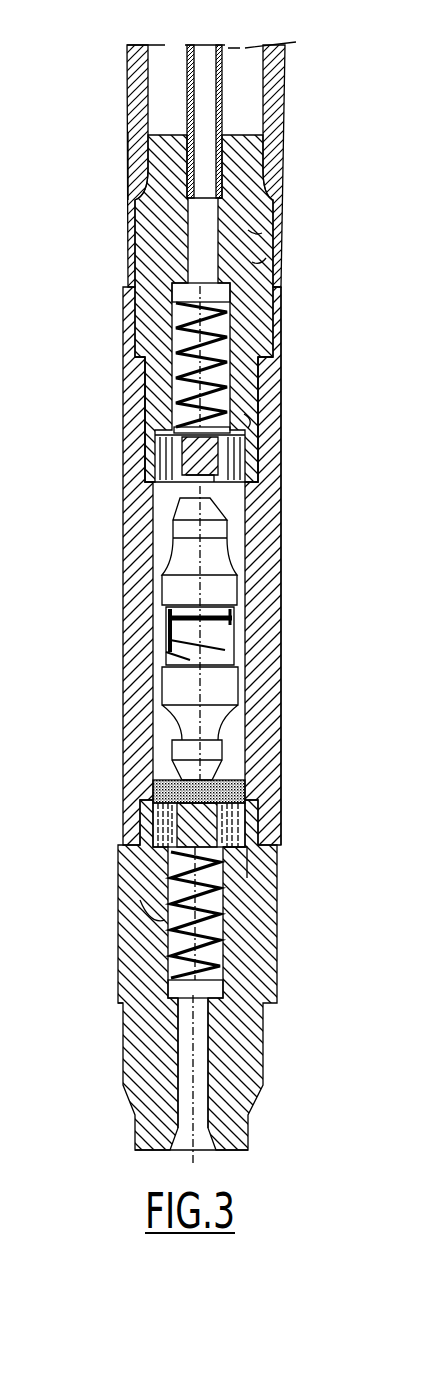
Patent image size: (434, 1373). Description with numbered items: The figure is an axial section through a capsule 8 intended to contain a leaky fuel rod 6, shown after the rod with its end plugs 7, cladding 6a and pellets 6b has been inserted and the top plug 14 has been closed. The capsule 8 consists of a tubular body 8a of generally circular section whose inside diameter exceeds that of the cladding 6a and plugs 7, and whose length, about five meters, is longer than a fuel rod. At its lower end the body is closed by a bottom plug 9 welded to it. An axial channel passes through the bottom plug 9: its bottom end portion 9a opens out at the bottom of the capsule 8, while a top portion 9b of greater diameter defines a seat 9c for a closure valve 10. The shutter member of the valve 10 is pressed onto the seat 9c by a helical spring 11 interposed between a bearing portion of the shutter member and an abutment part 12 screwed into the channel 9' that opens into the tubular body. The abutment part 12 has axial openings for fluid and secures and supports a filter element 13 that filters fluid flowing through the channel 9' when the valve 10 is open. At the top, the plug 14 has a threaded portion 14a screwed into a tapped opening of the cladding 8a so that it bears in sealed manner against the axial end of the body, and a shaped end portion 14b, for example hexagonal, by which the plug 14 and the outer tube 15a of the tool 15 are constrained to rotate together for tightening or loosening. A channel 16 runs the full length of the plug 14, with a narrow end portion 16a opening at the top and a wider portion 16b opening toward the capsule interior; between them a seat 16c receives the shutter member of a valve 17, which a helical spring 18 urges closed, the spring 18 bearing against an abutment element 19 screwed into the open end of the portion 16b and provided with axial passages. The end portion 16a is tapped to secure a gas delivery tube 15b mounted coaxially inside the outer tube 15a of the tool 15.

The fuel rod 6 is at (165, 628).
The cladding 6a is at (305, 604).
The pellets 6b is at (305, 593).
The end plugs 7 is at (220, 593).
The capsule 8 is at (324, 630).
The tubular body 8a is at (278, 506).
The bottom plug 9 is at (213, 975).
The channel 9' is at (121, 899).
The bottom end portion 9a is at (200, 1070).
The top portion 9b is at (245, 878).
The seat 9c is at (137, 1010).
The closure valve 10 is at (210, 990).
The helical spring 11 is at (168, 955).
The abutment part 12 is at (153, 847).
The filter element 13 is at (152, 790).
The plug 14 is at (160, 243).
The threaded portion 14a is at (242, 414).
The end portion 14b is at (258, 258).
The tool 15 is at (302, 107).
The outer tube 15a is at (128, 132).
The tube 15b is at (187, 61).
The channel 16 is at (257, 342).
The end portion 16a is at (250, 232).
The portion 16b is at (160, 440).
The seat 16c is at (280, 295).
The valve 17 is at (172, 295).
The helical spring 18 is at (180, 412).
The abutment element 19 is at (198, 452).